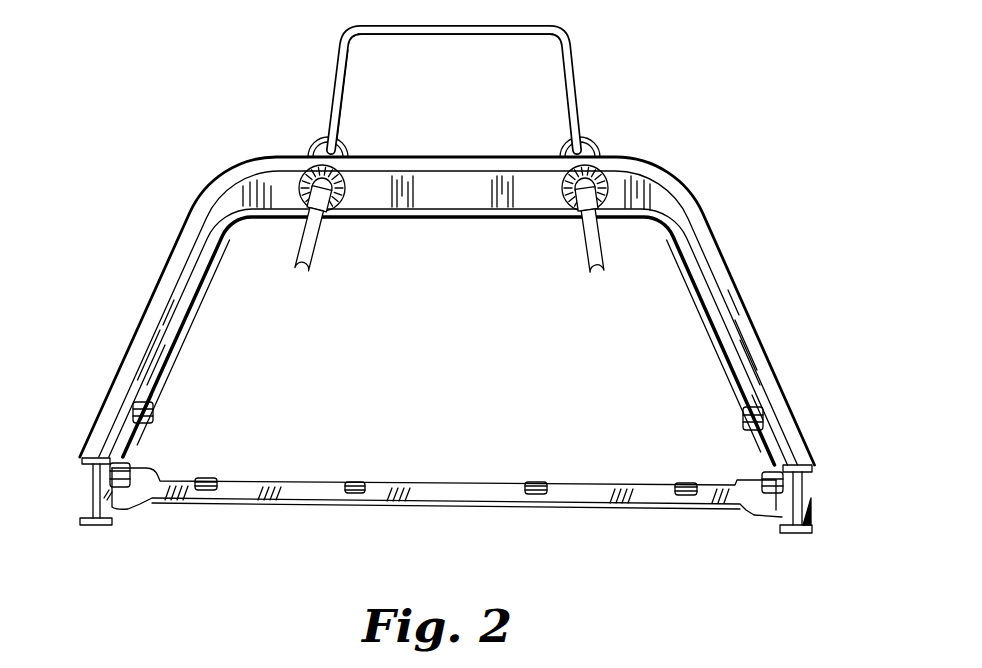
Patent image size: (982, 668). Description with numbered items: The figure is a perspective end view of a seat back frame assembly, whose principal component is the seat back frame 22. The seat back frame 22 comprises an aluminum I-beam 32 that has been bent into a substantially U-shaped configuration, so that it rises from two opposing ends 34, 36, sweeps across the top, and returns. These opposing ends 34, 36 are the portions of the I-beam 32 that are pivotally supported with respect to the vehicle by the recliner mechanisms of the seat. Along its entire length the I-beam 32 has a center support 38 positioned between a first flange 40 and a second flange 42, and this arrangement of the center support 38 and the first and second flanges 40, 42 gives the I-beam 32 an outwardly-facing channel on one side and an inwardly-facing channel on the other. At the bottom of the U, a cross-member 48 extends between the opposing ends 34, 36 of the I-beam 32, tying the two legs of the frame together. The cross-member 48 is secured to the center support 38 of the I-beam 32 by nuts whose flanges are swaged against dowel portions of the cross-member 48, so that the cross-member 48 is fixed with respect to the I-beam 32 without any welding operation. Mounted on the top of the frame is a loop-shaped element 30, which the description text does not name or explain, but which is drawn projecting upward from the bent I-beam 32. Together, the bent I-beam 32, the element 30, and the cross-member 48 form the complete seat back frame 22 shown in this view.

The seat back frame 22 is at (758, 309).
The handle 30 is at (326, 80).
The I-beam 32 is at (160, 300).
The opposing end 34 is at (88, 444).
The opposing end 36 is at (790, 446).
The center support 38 is at (88, 498).
The first flange 40 is at (85, 460).
The second flange 42 is at (80, 523).
The cross-member 48 is at (424, 492).